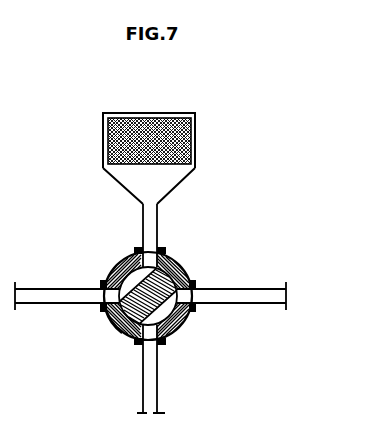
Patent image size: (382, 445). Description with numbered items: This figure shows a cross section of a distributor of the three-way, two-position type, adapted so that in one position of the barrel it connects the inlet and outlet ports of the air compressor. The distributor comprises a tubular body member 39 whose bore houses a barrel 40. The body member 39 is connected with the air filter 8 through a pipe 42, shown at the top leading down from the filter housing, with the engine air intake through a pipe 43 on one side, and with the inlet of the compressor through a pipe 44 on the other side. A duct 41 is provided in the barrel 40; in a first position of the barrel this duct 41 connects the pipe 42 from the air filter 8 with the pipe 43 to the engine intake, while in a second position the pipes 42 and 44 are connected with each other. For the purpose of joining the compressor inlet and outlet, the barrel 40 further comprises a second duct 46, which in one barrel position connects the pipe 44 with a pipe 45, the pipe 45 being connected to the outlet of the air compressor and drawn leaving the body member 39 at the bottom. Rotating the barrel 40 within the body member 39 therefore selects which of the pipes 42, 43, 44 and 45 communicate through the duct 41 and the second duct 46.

The air filter 8 is at (133, 117).
The tubular body member 39 is at (185, 268).
The barrel 40 is at (110, 320).
The duct 41 is at (134, 274).
The pipe 42 is at (150, 227).
The pipe 43 is at (72, 293).
The pipe 44 is at (263, 293).
The pipe 45 is at (152, 379).
The second duct 46 is at (162, 313).